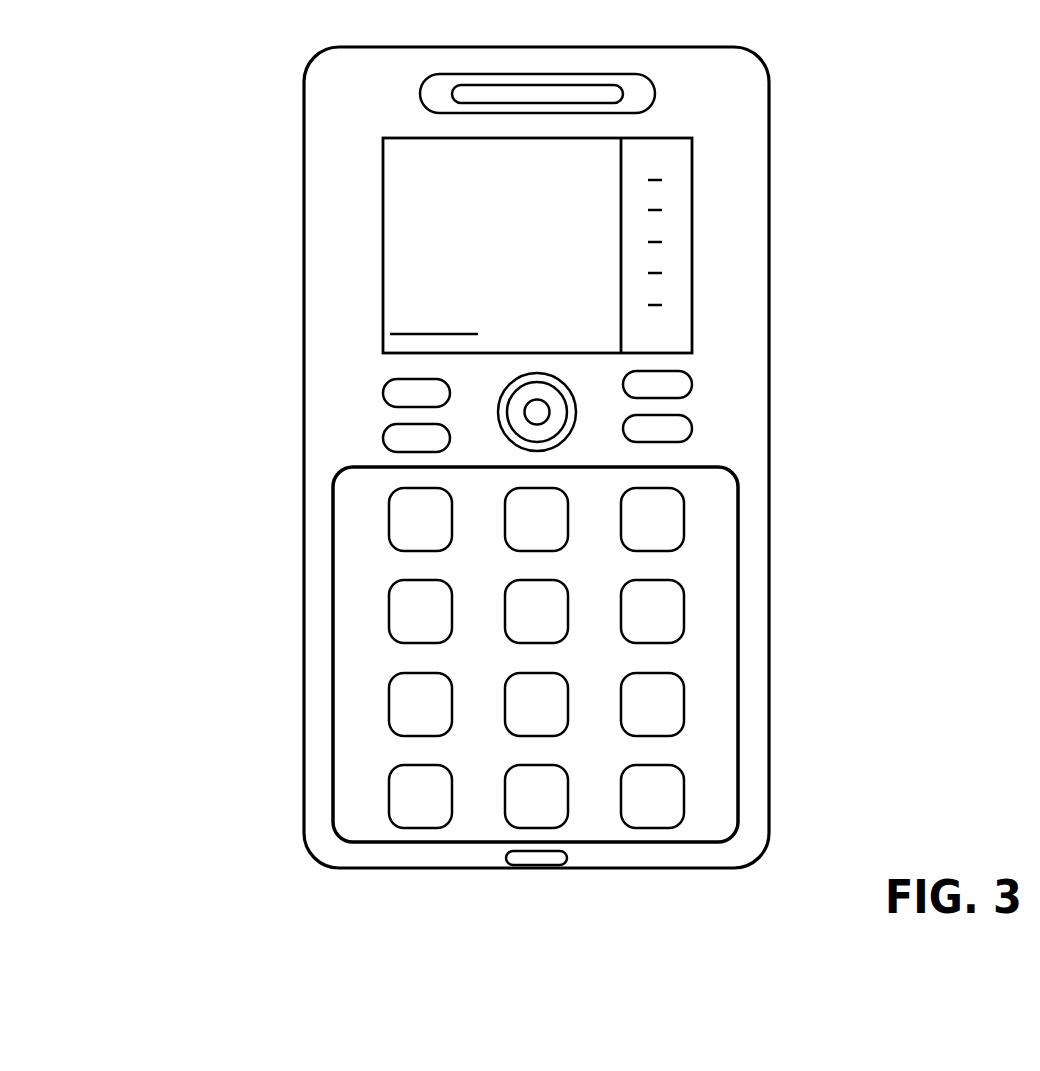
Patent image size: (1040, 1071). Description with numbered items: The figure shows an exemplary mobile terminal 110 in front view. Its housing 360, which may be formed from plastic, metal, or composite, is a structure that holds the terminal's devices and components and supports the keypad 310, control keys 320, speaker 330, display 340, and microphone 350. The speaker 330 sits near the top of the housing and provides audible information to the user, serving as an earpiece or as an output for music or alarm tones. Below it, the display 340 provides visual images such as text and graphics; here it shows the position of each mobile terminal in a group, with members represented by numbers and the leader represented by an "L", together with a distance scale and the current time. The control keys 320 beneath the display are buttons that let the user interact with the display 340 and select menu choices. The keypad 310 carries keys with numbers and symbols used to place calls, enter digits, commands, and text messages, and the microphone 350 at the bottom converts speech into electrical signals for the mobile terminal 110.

The mobile terminal 110 is at (190, 301).
The keypad 310 is at (479, 654).
The control keys 320 is at (792, 357).
The speaker 330 is at (537, 59).
The display 340 is at (567, 245).
The microphone 350 is at (519, 888).
The housing 360 is at (577, 457).